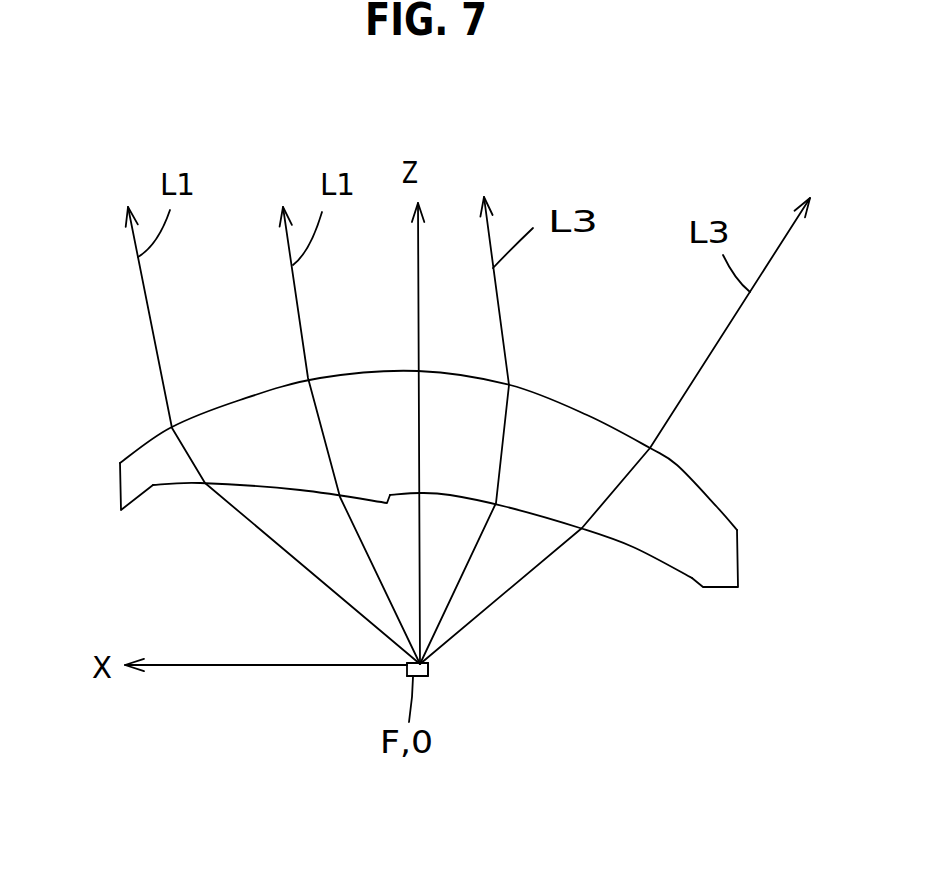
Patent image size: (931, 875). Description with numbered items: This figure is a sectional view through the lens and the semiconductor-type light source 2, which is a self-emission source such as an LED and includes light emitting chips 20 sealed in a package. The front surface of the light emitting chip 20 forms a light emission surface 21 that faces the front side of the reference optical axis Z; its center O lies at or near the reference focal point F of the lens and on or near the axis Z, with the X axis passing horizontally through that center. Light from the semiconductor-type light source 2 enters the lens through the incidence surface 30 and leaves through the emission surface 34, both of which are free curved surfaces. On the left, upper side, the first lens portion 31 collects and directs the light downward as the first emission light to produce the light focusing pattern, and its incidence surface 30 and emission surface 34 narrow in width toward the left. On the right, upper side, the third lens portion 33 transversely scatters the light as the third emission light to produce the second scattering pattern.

The semiconductor-type light source 2 is at (400, 678).
The light emitting chip 20 is at (428, 677).
The light emission surface 21 is at (430, 660).
The incidence surface 30 is at (170, 487).
The first lens portion 31 is at (125, 485).
The third lens portion 33 is at (720, 535).
The emission surface 34 is at (140, 445).